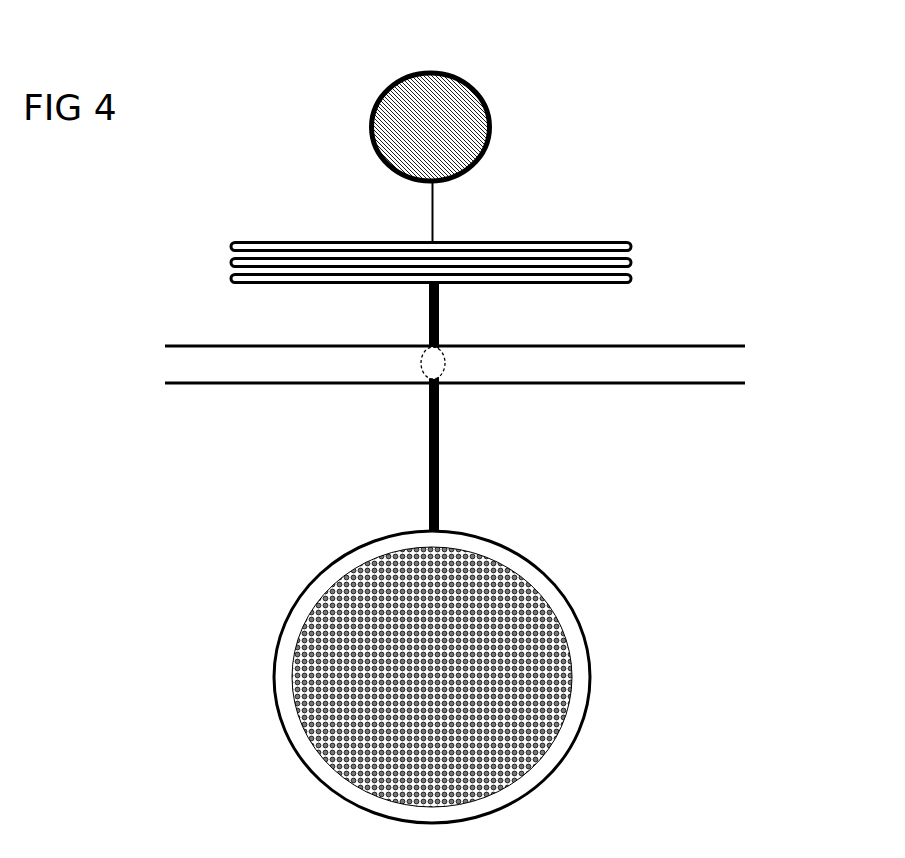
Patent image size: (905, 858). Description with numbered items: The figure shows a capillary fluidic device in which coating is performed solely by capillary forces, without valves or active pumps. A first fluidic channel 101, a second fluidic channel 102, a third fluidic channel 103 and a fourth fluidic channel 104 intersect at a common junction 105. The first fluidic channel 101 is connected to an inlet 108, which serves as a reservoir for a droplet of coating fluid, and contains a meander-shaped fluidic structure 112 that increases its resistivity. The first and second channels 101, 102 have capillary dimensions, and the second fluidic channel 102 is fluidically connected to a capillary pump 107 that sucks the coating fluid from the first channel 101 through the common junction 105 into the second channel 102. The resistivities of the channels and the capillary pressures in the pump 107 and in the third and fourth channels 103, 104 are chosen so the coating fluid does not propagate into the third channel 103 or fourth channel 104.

The first fluidic channel 101 is at (433, 220).
The second fluidic channel 102 is at (438, 470).
The third fluidic channel 103 is at (195, 345).
The fourth fluidic channel 104 is at (680, 345).
The common junction 105 is at (440, 372).
The capillary pump 107 is at (568, 607).
The inlet 108 is at (488, 108).
The fluidic structure 112 is at (629, 236).